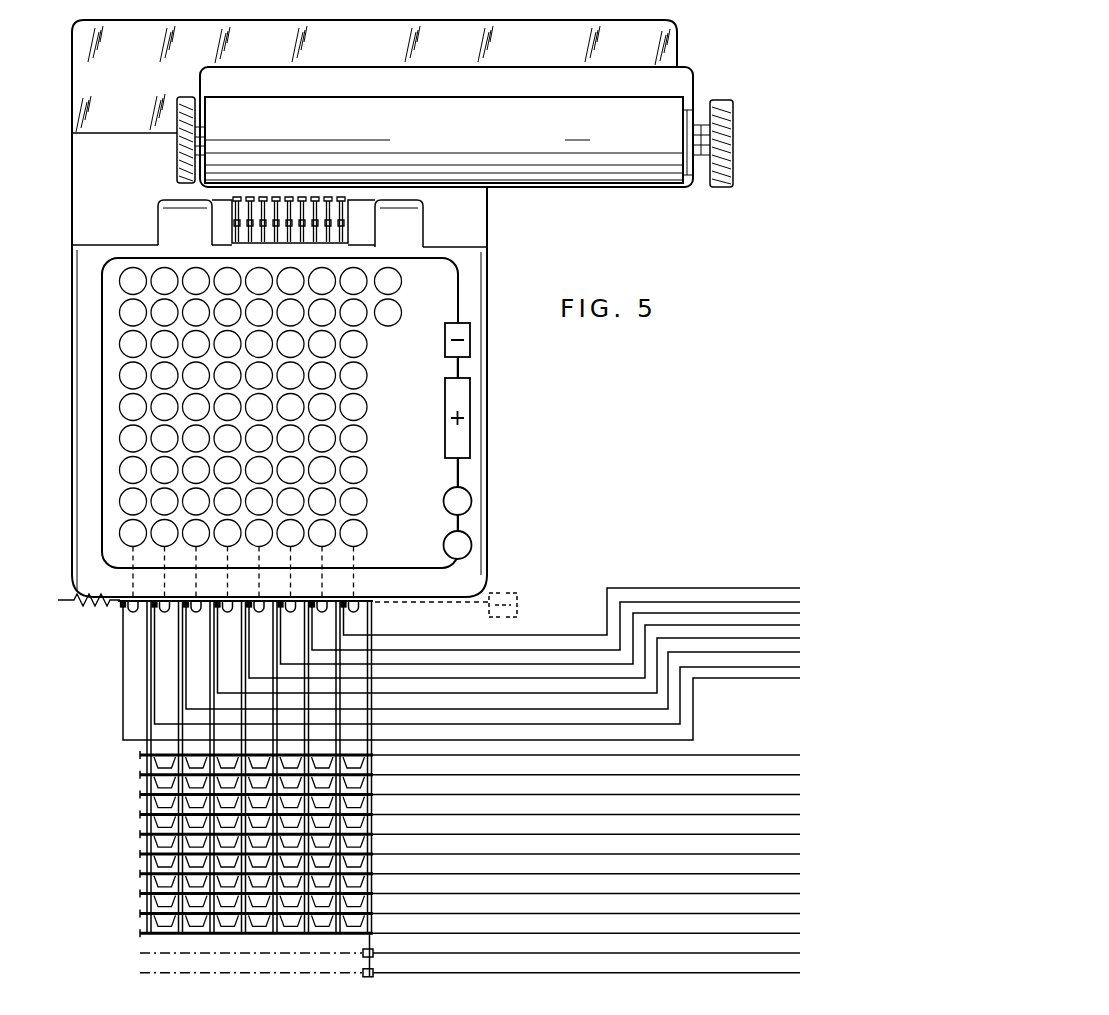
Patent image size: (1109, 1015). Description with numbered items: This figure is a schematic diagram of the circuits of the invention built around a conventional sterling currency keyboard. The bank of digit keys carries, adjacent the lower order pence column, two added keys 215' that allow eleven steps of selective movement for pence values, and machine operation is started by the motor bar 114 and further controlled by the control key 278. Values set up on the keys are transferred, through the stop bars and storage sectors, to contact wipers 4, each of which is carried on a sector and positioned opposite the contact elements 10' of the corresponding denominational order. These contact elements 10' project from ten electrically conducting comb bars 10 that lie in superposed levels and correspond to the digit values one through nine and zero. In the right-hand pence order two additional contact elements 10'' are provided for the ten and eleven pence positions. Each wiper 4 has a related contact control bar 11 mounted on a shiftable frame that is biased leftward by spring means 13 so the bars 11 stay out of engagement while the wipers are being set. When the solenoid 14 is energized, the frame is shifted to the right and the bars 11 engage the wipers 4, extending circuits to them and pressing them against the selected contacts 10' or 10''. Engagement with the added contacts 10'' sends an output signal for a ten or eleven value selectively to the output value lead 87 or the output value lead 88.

The pence keys 215' is at (239, 407).
The motor bar 114 is at (468, 448).
The control key 278 is at (471, 548).
The solenoid 14 is at (508, 597).
The spring means 13 is at (58, 601).
The contact control bar 11 is at (118, 609).
The contact wiper 4 is at (137, 612).
The contact elements 10' is at (440, 782).
The comb bars 10 is at (458, 864).
The additional contact elements 10'' is at (256, 959).
The output value lead 87 is at (783, 953).
The output value lead 88 is at (783, 975).